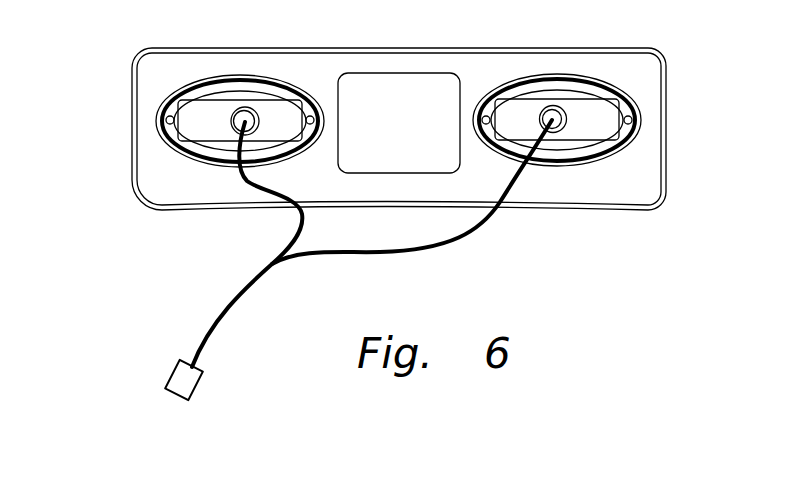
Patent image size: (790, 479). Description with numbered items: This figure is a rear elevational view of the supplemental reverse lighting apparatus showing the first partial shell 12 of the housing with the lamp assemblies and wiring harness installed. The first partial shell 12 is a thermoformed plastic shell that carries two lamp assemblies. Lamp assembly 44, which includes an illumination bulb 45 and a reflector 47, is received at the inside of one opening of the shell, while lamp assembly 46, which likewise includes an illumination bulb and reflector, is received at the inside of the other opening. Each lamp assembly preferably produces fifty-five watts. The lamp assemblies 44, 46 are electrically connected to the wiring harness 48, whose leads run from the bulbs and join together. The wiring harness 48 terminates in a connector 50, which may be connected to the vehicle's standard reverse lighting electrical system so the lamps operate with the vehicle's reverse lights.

The first partial shell 12 is at (623, 172).
The lamp assembly 44 is at (565, 158).
The illumination bulb 45 is at (551, 106).
The lamp assembly 46 is at (150, 82).
The reflector 47 is at (577, 117).
The wiring harness 48 is at (220, 312).
The connector 50 is at (197, 388).